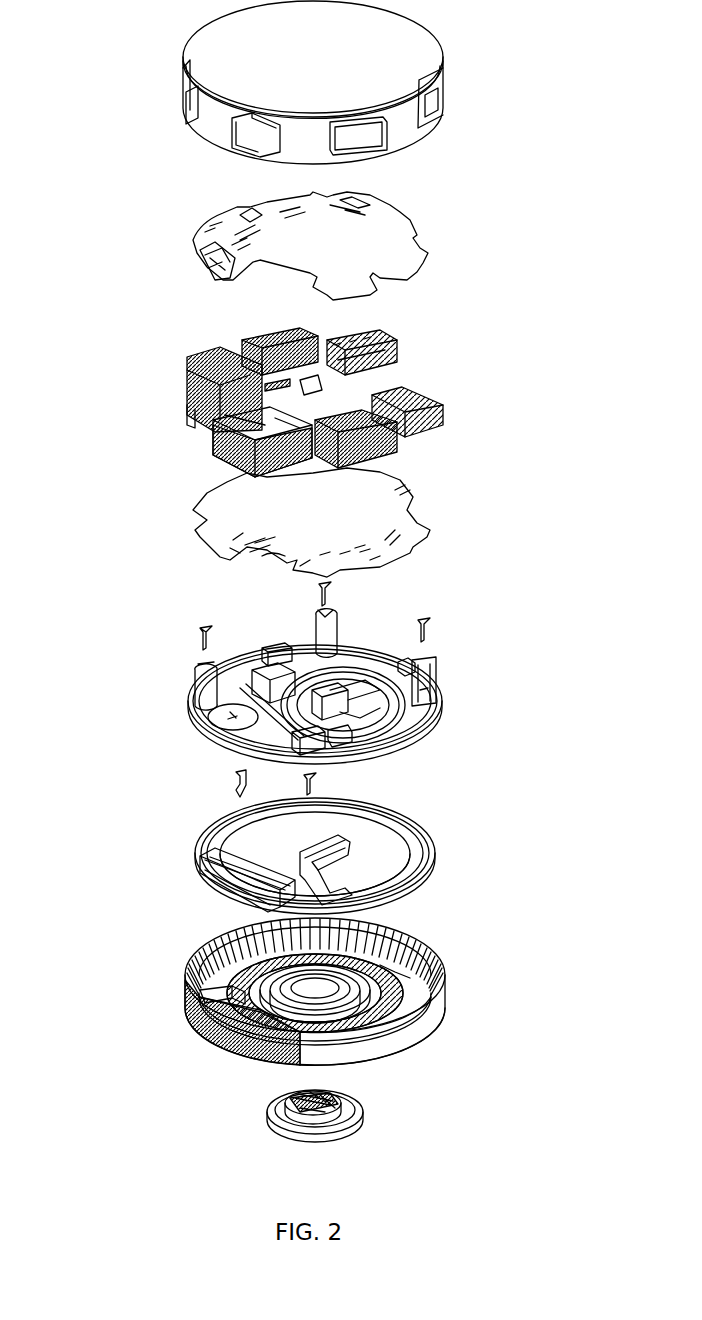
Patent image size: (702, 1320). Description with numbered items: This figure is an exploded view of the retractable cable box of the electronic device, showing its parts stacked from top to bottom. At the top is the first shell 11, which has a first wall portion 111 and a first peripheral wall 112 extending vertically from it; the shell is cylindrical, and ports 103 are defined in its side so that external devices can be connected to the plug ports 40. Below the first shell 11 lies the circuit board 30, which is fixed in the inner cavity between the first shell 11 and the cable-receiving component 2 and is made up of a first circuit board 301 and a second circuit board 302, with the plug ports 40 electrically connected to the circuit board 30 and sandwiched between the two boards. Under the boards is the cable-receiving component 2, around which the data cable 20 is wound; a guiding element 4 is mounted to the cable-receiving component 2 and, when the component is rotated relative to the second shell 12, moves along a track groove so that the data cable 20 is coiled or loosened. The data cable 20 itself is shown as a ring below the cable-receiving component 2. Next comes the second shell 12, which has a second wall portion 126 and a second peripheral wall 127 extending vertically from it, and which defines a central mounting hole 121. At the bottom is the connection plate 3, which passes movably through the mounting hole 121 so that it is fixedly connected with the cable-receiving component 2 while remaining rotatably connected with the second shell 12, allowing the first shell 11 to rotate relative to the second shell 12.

The first shell 11 is at (203, 60).
The first wall portion 111 is at (186, 85).
The first peripheral wall 112 is at (218, 125).
The ports 103 is at (380, 138).
The circuit board 30 is at (415, 262).
The first circuit board 301 is at (205, 255).
The plug ports 40 is at (440, 418).
The second circuit board 302 is at (210, 518).
The cable-receiving component 2 is at (402, 717).
The guiding element 4 is at (230, 783).
The data cable 20 is at (418, 850).
The second shell 12 is at (215, 980).
The mounting hole 121 is at (318, 992).
The second wall portion 126 is at (395, 972).
The second peripheral wall 127 is at (382, 1038).
The connection plate 3 is at (270, 1112).